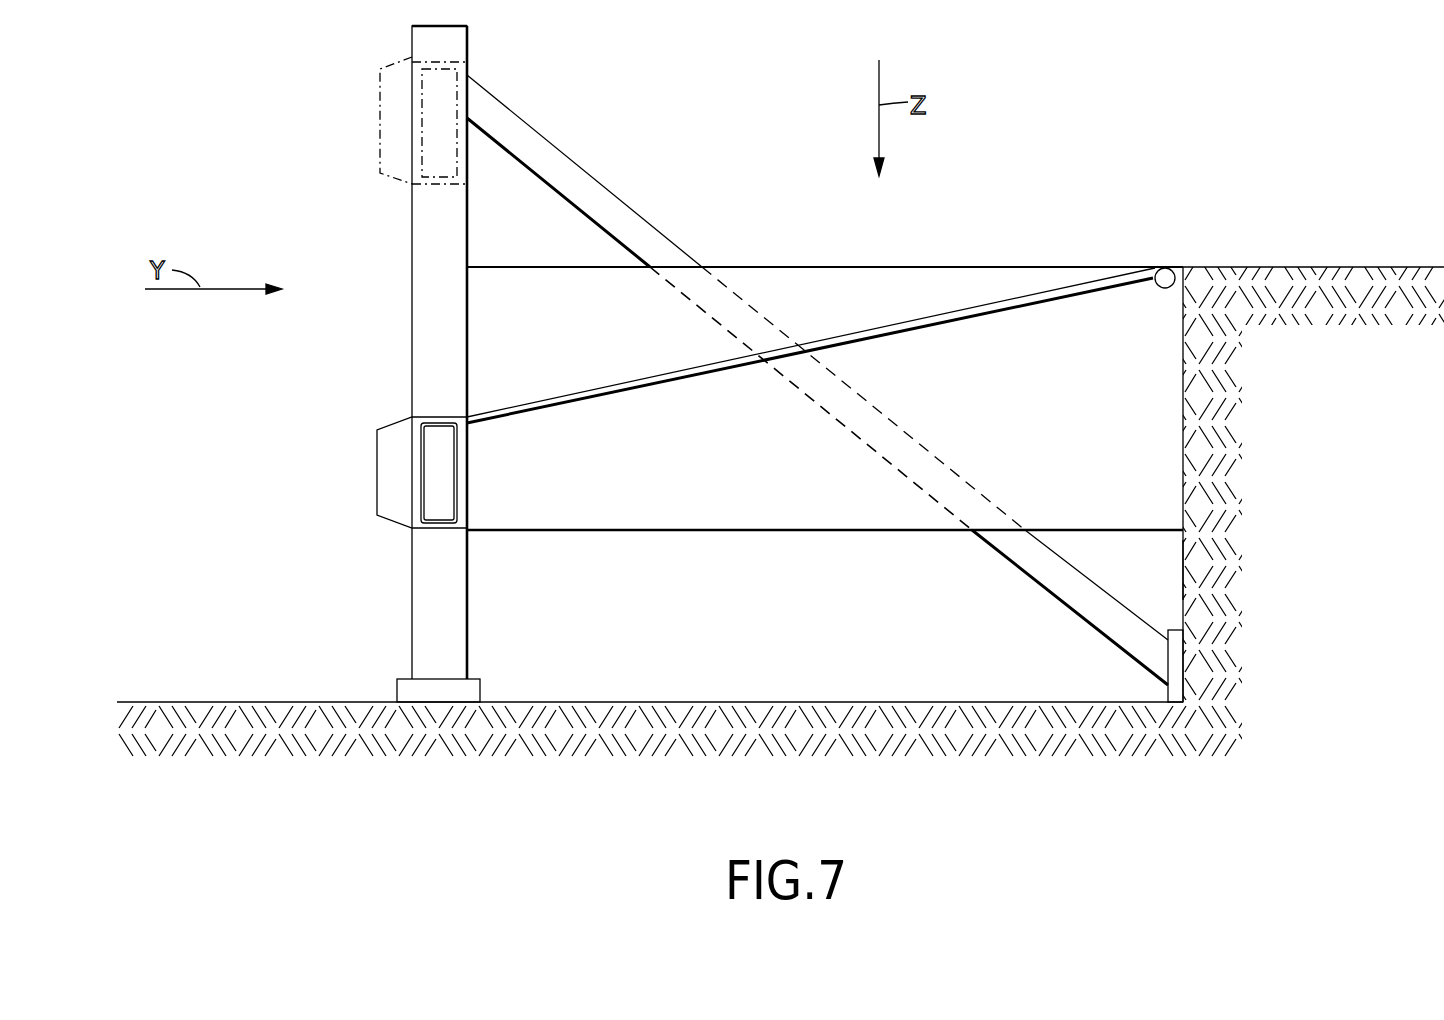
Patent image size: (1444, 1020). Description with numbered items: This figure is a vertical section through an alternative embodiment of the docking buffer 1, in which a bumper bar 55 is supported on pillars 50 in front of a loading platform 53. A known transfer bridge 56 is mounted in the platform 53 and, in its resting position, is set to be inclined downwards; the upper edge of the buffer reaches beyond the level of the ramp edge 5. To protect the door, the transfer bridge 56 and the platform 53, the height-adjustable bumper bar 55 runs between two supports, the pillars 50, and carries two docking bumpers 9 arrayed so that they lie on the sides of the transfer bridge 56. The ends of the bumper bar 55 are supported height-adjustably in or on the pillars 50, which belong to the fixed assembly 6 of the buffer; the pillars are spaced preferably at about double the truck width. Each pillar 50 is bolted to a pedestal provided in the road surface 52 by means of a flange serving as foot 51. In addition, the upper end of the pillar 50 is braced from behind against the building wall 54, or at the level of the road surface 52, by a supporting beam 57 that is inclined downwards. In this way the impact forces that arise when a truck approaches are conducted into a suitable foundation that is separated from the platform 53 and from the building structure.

The docking buffer 1 is at (395, 172).
The ramp edge 5 is at (1240, 267).
The fixed assembly 6 is at (493, 352).
The docking bumper 9 is at (392, 440).
The pillar 50 is at (452, 635).
The foot 51 is at (425, 690).
The road surface 52 is at (882, 702).
The platform 53 is at (917, 287).
The building wall 54 is at (1185, 565).
The bumper bar 55 is at (467, 480).
The transfer bridge 56 is at (668, 385).
The supporting beam 57 is at (545, 152).